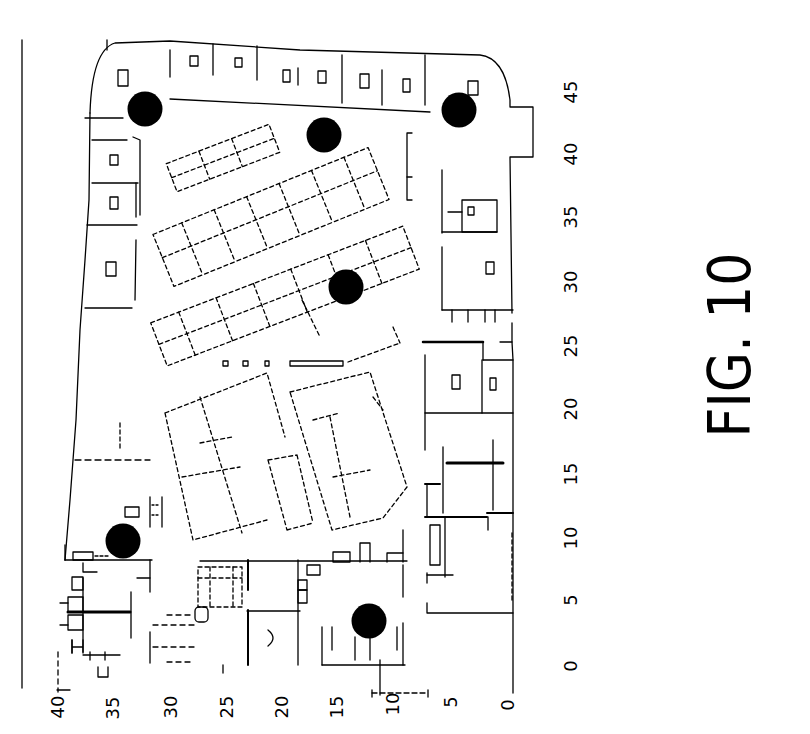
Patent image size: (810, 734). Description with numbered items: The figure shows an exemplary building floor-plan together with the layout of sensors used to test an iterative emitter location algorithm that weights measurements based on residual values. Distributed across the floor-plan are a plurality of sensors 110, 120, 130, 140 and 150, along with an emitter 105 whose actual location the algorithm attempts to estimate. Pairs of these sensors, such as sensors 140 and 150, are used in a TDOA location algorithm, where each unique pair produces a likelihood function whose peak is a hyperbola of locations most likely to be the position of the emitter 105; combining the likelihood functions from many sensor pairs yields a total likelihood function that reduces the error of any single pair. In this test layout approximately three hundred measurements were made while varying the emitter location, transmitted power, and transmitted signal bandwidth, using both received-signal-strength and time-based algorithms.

The emitter 105 is at (311, 136).
The sensor 110 is at (331, 286).
The sensor 120 is at (497, 116).
The sensor 130 is at (113, 527).
The sensor 140 is at (159, 119).
The sensor 150 is at (359, 613).